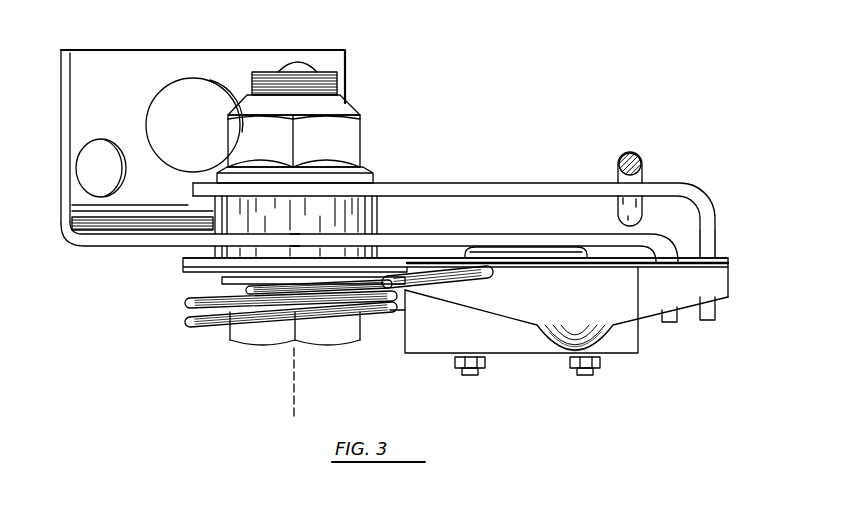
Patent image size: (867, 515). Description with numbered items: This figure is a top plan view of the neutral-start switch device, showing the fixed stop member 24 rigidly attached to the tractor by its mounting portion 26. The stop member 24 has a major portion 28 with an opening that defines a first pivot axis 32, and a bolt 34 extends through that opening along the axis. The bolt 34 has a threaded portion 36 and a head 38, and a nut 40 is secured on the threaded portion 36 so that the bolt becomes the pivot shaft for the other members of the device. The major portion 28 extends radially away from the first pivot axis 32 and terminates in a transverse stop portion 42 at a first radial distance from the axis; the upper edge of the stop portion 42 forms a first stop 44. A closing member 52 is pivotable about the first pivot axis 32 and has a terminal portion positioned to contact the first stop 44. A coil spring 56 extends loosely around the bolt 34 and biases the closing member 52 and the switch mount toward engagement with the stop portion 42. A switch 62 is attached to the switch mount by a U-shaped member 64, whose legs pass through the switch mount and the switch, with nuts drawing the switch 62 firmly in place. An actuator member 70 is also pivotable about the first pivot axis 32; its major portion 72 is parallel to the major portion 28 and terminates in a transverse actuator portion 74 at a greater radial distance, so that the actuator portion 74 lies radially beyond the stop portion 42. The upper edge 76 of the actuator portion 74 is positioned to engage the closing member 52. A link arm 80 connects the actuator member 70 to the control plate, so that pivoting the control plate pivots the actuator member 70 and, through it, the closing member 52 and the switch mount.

The fixed stop member 24 is at (120, 242).
The mounting portion 26 is at (125, 67).
The major portion 28 is at (392, 240).
The first pivot axis 32 is at (292, 382).
The bolt 34 is at (338, 76).
The threaded portion 36 is at (335, 76).
The head 38 is at (340, 333).
The nut 40 is at (343, 127).
The stop portion 42 is at (693, 335).
The first stop 44 is at (668, 322).
The closing member 52 is at (600, 260).
The coil spring 56 is at (191, 324).
The switch 62 is at (525, 355).
The U-shaped member 64 is at (527, 250).
The actuator member 70 is at (454, 202).
The major portion 72 is at (438, 180).
The actuator portion 74 is at (717, 245).
The upper edge 76 is at (707, 215).
The link arm 80 is at (639, 156).